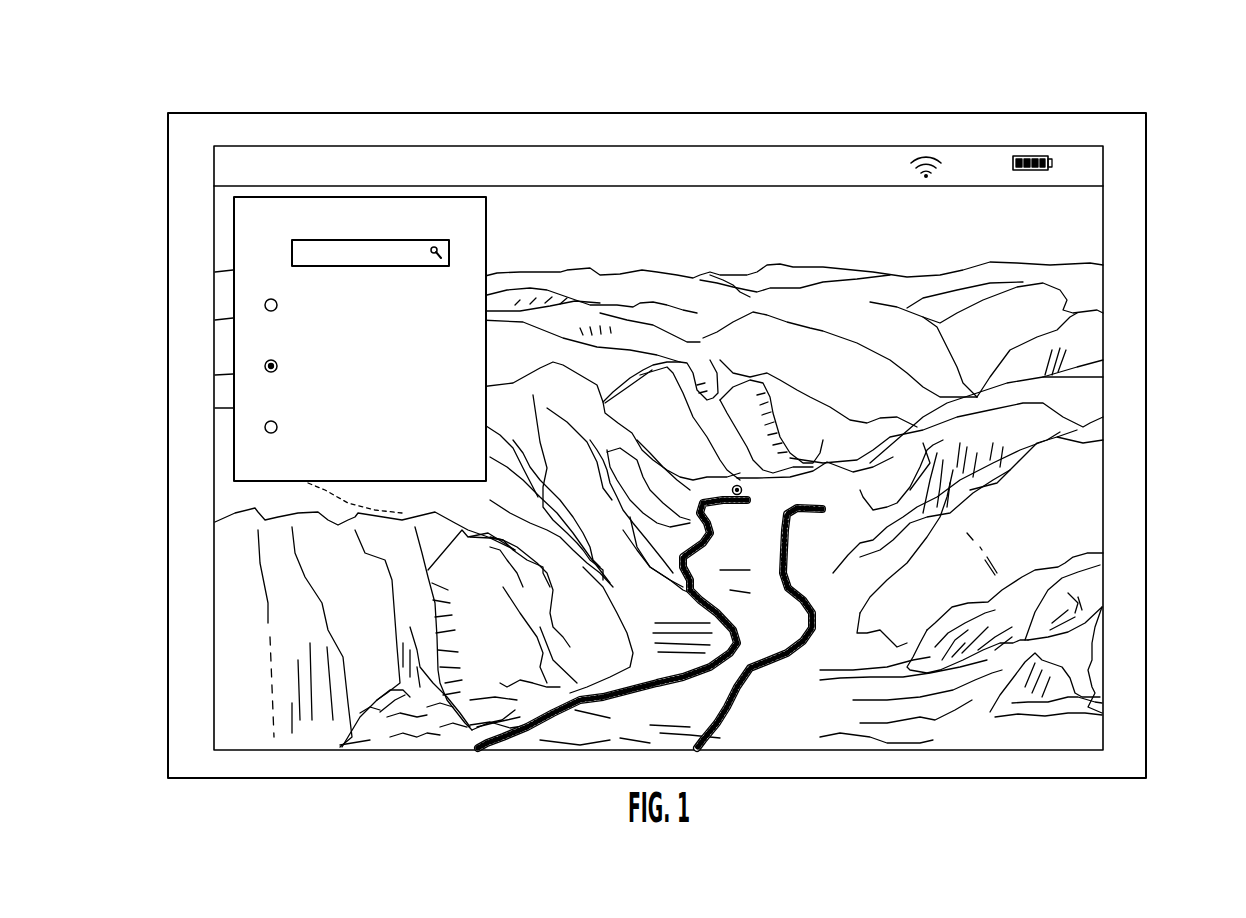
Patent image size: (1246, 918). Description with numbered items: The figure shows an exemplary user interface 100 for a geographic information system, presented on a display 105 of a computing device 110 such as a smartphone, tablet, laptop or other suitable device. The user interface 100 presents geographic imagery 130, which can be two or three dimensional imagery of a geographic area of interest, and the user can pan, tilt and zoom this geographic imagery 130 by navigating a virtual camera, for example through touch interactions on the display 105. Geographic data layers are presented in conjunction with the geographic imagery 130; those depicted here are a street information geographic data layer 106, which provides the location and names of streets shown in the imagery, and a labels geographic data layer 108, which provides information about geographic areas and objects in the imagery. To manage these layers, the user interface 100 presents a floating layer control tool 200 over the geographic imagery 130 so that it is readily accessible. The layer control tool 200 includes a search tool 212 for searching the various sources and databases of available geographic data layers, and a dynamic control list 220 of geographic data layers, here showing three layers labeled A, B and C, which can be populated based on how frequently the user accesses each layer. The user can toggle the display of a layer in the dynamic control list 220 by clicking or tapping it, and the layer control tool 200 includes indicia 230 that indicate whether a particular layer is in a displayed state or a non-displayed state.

The user interface 100 is at (795, 158).
The display 105 is at (1103, 248).
The street information geographic data layer 106 is at (741, 705).
The labels geographic data layer 108 is at (806, 481).
The computing device 110 is at (1073, 113).
The geographic imagery 130 is at (1103, 420).
The layer control tool 200 is at (321, 401).
The search tool 212 is at (450, 246).
The dynamic control list 220 is at (455, 292).
The indicia 230 is at (265, 366).